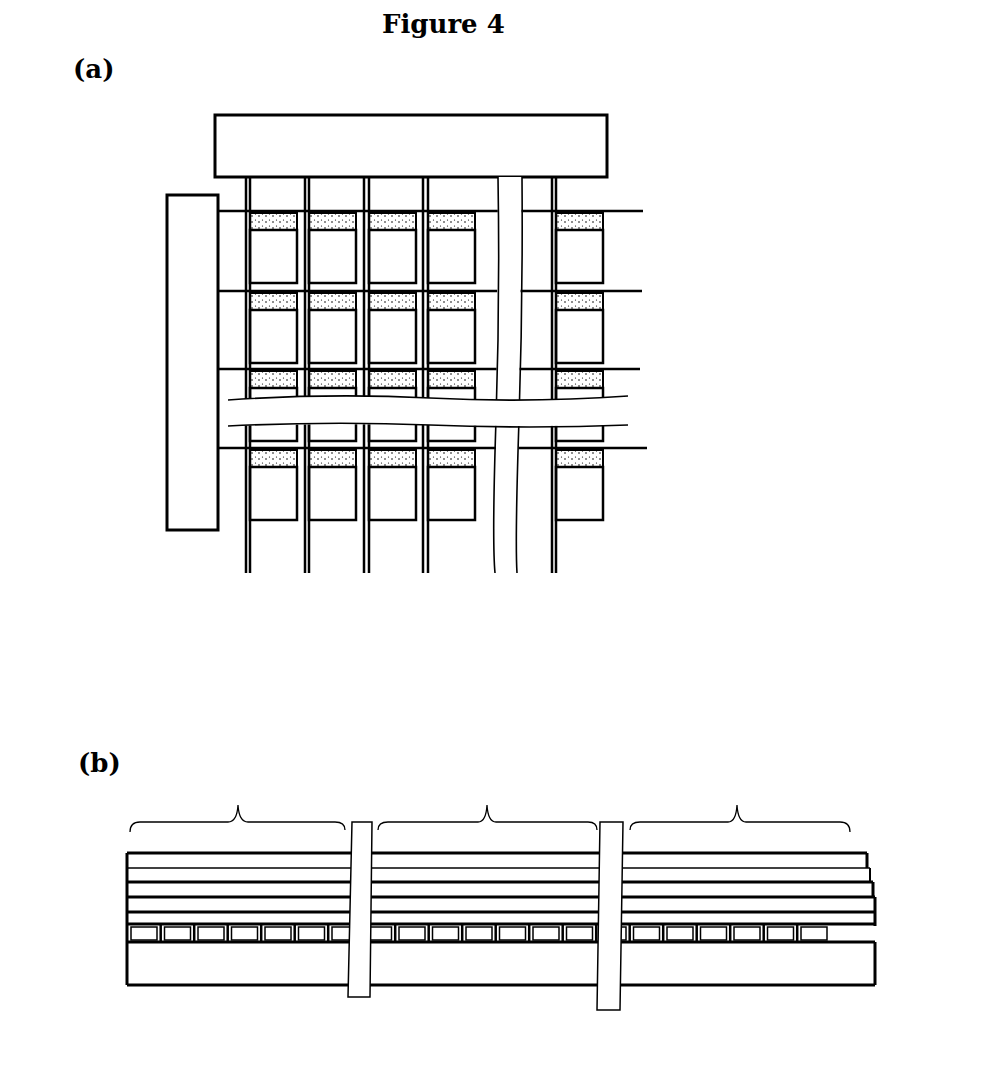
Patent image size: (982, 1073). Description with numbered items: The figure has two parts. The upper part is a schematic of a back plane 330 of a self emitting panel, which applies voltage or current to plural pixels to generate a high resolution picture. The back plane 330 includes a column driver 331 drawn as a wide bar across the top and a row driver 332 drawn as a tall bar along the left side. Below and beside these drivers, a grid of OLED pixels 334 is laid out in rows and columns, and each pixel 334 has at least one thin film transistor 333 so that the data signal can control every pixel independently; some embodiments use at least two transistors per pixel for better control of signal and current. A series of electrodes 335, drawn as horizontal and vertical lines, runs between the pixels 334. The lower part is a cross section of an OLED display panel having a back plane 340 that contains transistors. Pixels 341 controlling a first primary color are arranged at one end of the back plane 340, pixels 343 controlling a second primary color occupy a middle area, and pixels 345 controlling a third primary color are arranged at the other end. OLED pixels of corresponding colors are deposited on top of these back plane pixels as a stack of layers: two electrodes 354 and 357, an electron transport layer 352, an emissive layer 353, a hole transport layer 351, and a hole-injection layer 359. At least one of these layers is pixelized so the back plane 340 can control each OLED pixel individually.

The back plane 330 is at (447, 344).
The column driver 331 is at (411, 146).
The row driver 332 is at (192, 362).
The thin film transistor 333 is at (573, 218).
The OLED pixel 334 is at (586, 250).
The electrodes 335 is at (432, 375).
The back plane 340 is at (465, 962).
The pixels 341 is at (237, 805).
The pixels 343 is at (487, 804).
The pixels 345 is at (740, 805).
The hole transport layer 351 is at (135, 902).
The electron transport layer 352 is at (135, 870).
The emissive layer 353 is at (135, 887).
The electrode 354 is at (142, 853).
The electrode 357 is at (137, 938).
The hole-injection layer 359 is at (138, 915).